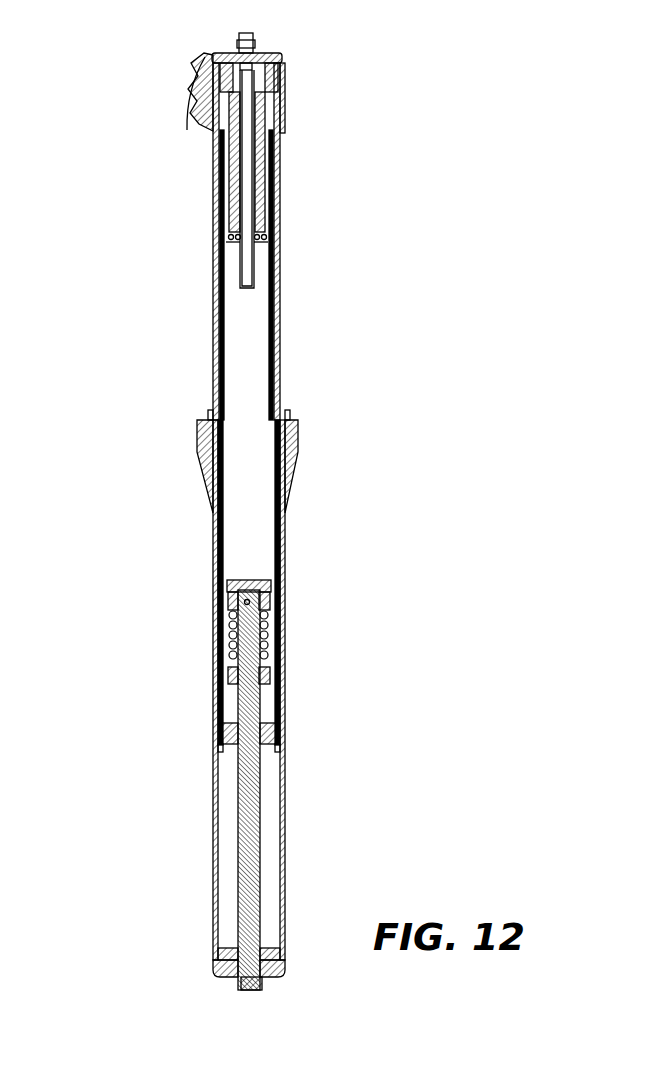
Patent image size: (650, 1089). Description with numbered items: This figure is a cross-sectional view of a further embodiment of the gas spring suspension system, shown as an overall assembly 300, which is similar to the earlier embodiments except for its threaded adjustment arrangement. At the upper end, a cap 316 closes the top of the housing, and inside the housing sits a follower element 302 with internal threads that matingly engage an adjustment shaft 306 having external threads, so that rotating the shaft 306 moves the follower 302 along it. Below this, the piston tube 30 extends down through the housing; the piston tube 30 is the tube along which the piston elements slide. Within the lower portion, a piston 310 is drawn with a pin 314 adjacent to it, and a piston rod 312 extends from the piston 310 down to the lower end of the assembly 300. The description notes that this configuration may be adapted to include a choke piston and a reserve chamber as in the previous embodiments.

The damper assembly 300 is at (117, 245).
The end cap 316 is at (278, 57).
The follower element 302 is at (258, 200).
The adjustment shaft 306 is at (257, 262).
The piston tube 30 is at (272, 352).
The piston 310 is at (260, 581).
The pin 314 is at (252, 602).
The piston rod 312 is at (256, 709).